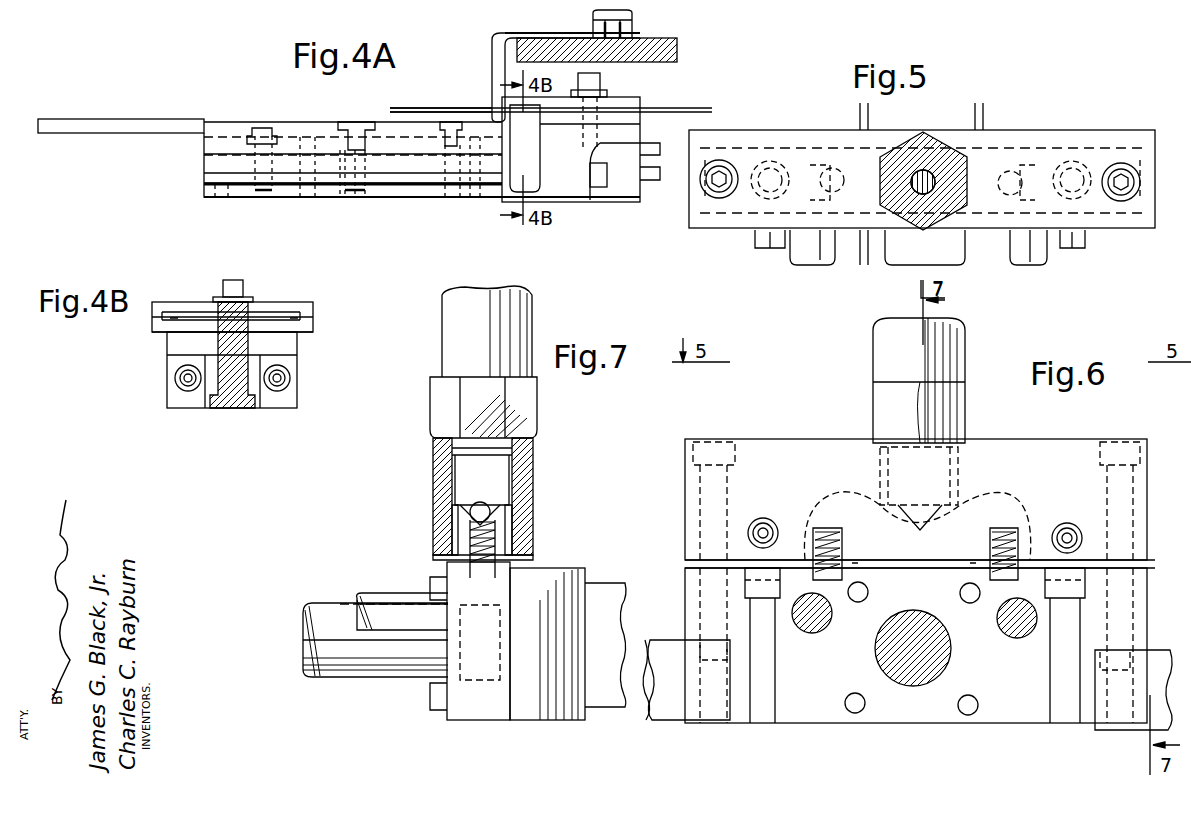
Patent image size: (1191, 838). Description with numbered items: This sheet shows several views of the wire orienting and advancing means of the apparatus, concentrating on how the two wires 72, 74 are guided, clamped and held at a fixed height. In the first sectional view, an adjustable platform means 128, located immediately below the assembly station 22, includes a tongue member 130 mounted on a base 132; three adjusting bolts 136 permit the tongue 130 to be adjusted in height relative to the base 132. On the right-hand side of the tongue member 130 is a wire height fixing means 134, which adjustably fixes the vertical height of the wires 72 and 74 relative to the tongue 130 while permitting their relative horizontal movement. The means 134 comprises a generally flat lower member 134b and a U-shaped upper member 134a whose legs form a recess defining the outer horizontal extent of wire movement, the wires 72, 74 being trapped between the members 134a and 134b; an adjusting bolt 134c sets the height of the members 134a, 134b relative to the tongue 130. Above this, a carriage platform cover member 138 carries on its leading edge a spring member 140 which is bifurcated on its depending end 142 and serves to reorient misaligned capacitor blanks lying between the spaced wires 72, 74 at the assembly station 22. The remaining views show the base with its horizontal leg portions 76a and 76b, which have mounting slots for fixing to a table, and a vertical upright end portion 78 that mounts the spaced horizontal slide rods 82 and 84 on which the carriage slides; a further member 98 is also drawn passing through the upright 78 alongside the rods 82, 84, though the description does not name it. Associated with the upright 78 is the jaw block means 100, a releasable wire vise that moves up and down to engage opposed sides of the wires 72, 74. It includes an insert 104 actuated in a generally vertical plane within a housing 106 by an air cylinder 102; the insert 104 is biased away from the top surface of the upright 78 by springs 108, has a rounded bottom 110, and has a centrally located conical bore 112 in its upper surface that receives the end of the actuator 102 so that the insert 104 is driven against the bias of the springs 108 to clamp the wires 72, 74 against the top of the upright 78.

In FIG. 4A, the assembly station 22 is at (410, 100).
In FIG. 4A, the wire 72 is at (682, 108).
In FIG. 4B, the wire 72 is at (290, 312).
In FIG. 5, the wire 72 is at (984, 117).
In FIG. 6, the wire 72 is at (972, 568).
In FIG. 4B, the wire 74 is at (176, 312).
In FIG. 5, the wire 74 is at (858, 115).
In FIG. 6, the wire 74 is at (858, 568).
In FIG. 6, the horizontal leg portion 76a is at (1135, 702).
In FIG. 6, the horizontal leg portion 76b is at (665, 705).
In FIG. 6, the vertical upright end portion 78 is at (922, 710).
In FIG. 5, the horizontal slide rod 82 is at (1045, 265).
In FIG. 7, the horizontal slide rod 82 is at (370, 598).
In FIG. 6, the horizontal slide rod 82 is at (1018, 637).
In FIG. 5, the horizontal slide rod 84 is at (800, 266).
In FIG. 6, the horizontal slide rod 84 is at (812, 628).
In FIG. 7, the shaft 98 is at (340, 670).
In FIG. 6, the shaft 98 is at (885, 663).
In FIG. 6, the jaw block means 100 is at (1020, 468).
In FIG. 5, the air cylinder 102 is at (950, 138).
In FIG. 7, the air cylinder 102 is at (426, 412).
In FIG. 6, the air cylinder 102 is at (870, 352).
In FIG. 7, the insert 104 is at (460, 520).
In FIG. 6, the insert 104 is at (830, 505).
In FIG. 5, the housing 106 is at (1068, 152).
In FIG. 7, the housing 106 is at (535, 470).
In FIG. 6, the housing 106 is at (768, 446).
In FIG. 6, the spring 108 is at (845, 545).
In FIG. 7, the rounded bottom 110 is at (515, 557).
In FIG. 7, the conical bore 112 is at (500, 518).
In FIG. 6, the conical bore 112 is at (925, 520).
In FIG. 4A, the adjustable platform means 128 is at (402, 208).
In FIG. 4A, the tongue member 130 is at (202, 120).
In FIG. 4A, the base 132 is at (428, 197).
In FIG. 4A, the wire height fixing means 134 is at (575, 175).
In FIG. 4B, the wire height fixing means 134 is at (320, 312).
In FIG. 4B, the upper member 134a is at (265, 302).
In FIG. 4B, the lower member 134b is at (306, 333).
In FIG. 4A, the adjusting bolt 134c is at (600, 82).
In FIG. 4B, the adjusting bolt 134c is at (230, 280).
In FIG. 4A, the adjusting bolts 136 is at (440, 124).
In FIG. 4A, the carriage platform cover member 138 is at (660, 42).
In FIG. 4A, the spring member 140 is at (505, 33).
In FIG. 4A, the depending end 142 is at (492, 67).